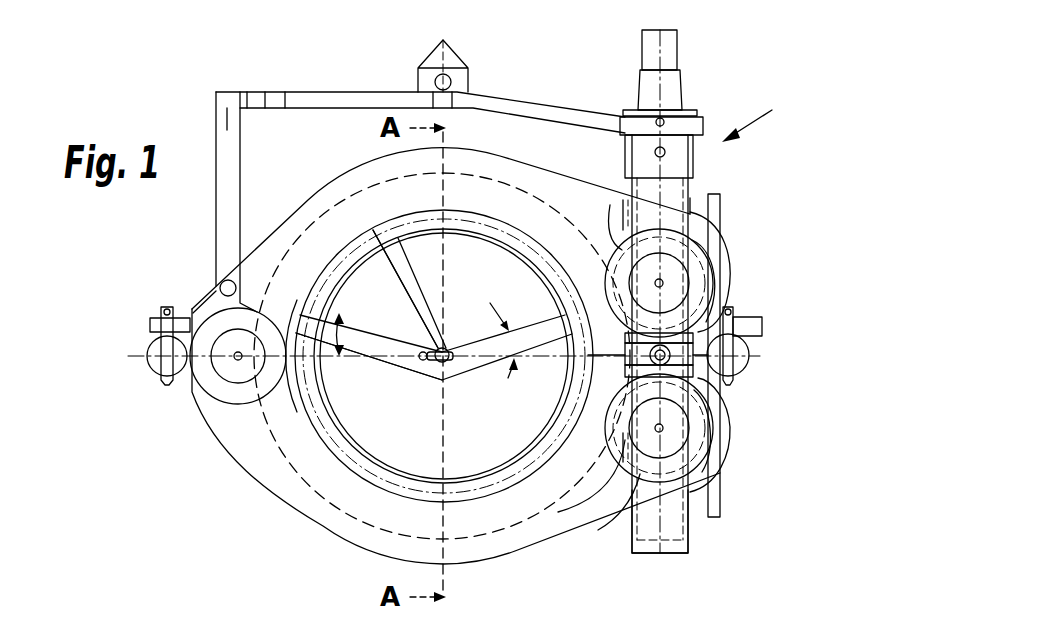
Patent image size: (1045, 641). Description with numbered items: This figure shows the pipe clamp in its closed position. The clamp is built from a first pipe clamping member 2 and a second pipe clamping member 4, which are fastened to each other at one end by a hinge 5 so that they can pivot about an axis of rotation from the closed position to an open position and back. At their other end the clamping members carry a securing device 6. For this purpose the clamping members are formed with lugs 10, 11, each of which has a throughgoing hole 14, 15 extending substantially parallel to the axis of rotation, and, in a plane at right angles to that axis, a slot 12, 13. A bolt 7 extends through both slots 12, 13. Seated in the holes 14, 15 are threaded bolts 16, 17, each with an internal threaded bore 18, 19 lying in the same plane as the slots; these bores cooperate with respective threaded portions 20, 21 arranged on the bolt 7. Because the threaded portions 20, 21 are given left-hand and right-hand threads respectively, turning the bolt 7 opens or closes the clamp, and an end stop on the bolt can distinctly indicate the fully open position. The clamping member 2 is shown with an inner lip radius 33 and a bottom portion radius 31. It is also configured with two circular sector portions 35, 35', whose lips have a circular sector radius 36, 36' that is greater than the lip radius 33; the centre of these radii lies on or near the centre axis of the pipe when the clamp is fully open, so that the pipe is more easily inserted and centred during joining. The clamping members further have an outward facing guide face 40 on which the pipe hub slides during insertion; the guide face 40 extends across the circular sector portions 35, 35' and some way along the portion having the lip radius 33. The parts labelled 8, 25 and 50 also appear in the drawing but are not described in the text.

The first pipe clamping member 2 is at (383, 168).
The second pipe clamping member 4 is at (270, 470).
The hinge 5 is at (238, 362).
The securing device 6 is at (759, 117).
The bolt 7 is at (668, 48).
The mounting plate 8 is at (688, 112).
The lug 10 is at (732, 285).
The lug 11 is at (730, 420).
The slot 12 is at (690, 258).
The slot 13 is at (715, 490).
The throughgoing hole 14 is at (717, 302).
The throughgoing hole 15 is at (715, 433).
The threaded bolt 16 is at (610, 205).
The threaded bolt 17 is at (558, 512).
The internal threaded bore 18 is at (700, 270).
The internal threaded bore 19 is at (598, 530).
The threaded portion 20 is at (695, 190).
The threaded portion 21 is at (692, 505).
The locking pin 25 is at (150, 348).
The bottom portion radius 31 is at (397, 278).
The inner lip radius 33 is at (418, 292).
The circular sector portion 35 is at (369, 360).
The circular sector portion 35' is at (503, 317).
The circular sector radius 36 is at (434, 381).
The circular sector radius 36' is at (485, 391).
The guide face 40 is at (316, 285).
The support bar 50 is at (500, 108).